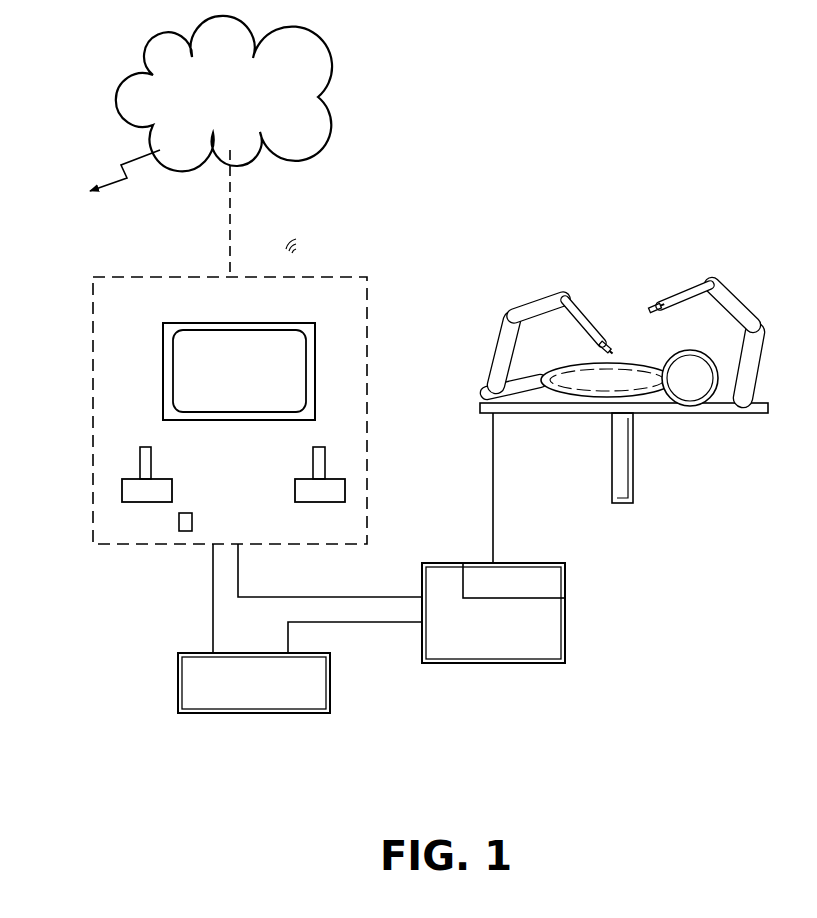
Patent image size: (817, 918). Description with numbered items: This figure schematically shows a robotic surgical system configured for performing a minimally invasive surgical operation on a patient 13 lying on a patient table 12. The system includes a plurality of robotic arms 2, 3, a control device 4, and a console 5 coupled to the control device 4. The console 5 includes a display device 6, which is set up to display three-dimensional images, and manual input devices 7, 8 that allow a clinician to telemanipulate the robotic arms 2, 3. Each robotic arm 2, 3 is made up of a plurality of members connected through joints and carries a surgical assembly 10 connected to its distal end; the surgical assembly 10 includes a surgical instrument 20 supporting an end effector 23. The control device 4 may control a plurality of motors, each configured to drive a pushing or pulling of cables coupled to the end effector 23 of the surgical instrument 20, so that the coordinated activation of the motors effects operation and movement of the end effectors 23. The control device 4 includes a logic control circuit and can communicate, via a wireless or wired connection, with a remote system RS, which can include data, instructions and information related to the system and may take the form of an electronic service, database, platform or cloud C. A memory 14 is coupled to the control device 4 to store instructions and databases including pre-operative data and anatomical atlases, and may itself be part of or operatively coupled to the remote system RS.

The robotic arm 2 is at (510, 292).
The robotic arm 3 is at (753, 285).
The control device 4 is at (500, 633).
The console 5 is at (182, 254).
The display device 6 is at (245, 381).
The input device 7 is at (124, 490).
The input device 8 is at (342, 490).
The surgical assembly 10 is at (590, 349).
The patient table 12 is at (568, 413).
The patient 13 is at (647, 386).
The memory 14 is at (265, 693).
The surgical instrument 20 is at (655, 302).
The end effector 23 is at (610, 353).
The cloud C is at (290, 62).
The remote system RS is at (300, 224).